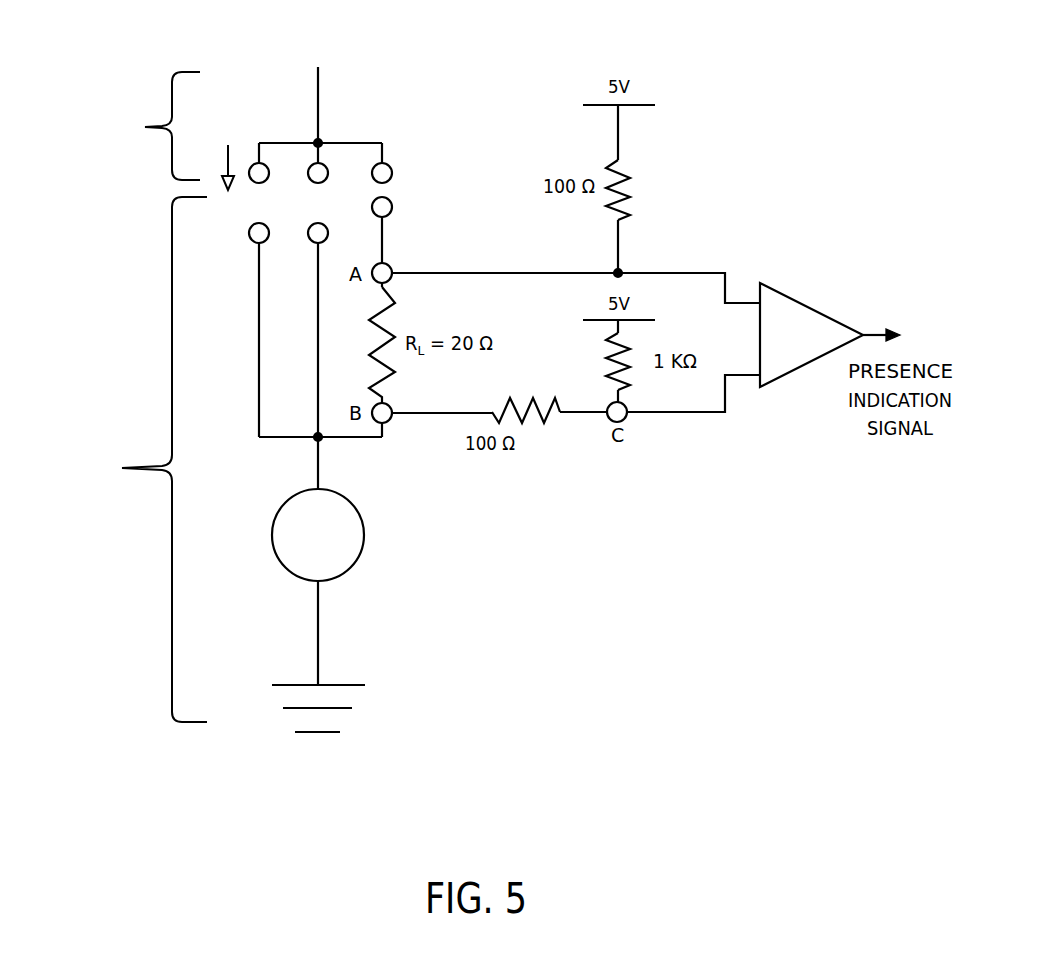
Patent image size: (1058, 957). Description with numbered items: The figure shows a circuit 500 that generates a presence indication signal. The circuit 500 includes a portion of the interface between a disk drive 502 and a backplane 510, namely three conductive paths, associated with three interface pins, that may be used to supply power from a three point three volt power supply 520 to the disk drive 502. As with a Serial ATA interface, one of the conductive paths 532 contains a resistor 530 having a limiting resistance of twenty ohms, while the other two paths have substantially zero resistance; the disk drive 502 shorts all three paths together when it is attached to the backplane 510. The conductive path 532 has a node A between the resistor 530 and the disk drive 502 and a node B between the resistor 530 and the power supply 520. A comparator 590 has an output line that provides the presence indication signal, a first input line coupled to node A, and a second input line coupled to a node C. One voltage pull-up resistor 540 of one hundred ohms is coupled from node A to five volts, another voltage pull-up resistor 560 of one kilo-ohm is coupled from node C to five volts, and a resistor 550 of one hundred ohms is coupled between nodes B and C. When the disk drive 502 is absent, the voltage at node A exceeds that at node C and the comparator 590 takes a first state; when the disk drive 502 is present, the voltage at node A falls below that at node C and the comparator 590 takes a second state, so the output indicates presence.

The circuit 500 is at (776, 106).
The disk drive 502 is at (110, 144).
The backplane 510 is at (102, 475).
The 3.3 Volt power supply 520 is at (365, 542).
The resistor 530 is at (393, 306).
The conductive path 532 is at (393, 208).
The voltage pull-up resistor 540 is at (632, 178).
The resistor 550 is at (520, 424).
The voltage pull-up resistor 560 is at (607, 378).
The comparator 590 is at (793, 295).